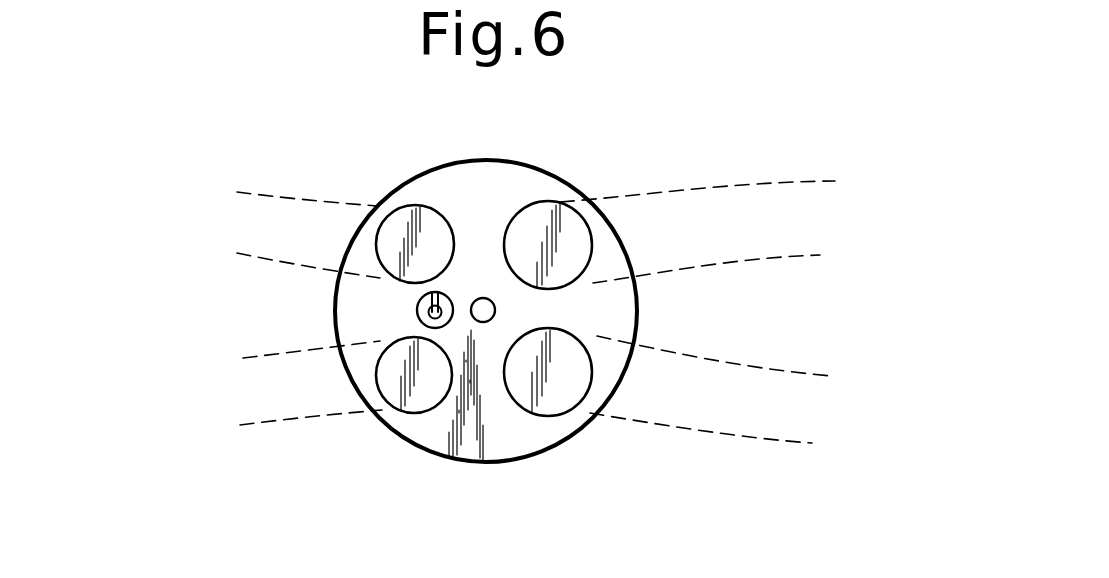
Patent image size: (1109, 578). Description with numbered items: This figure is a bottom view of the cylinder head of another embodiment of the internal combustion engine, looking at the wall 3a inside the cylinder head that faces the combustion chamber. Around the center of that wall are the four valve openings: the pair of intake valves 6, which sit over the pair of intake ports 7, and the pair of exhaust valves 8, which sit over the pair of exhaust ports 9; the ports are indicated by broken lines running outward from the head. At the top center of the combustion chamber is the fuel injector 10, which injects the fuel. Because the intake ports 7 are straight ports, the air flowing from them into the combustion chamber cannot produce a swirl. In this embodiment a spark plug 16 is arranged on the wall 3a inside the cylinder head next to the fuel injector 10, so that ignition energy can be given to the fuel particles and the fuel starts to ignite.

The wall inside the cylinder head 3a is at (489, 455).
The pair of intake valves 6 is at (547, 203).
The pair of intake ports 7 is at (716, 184).
The pair of exhaust valves 8 is at (415, 207).
The pair of exhaust ports 9 is at (302, 200).
The fuel injector 10 is at (485, 298).
The spark plug 16 is at (427, 307).